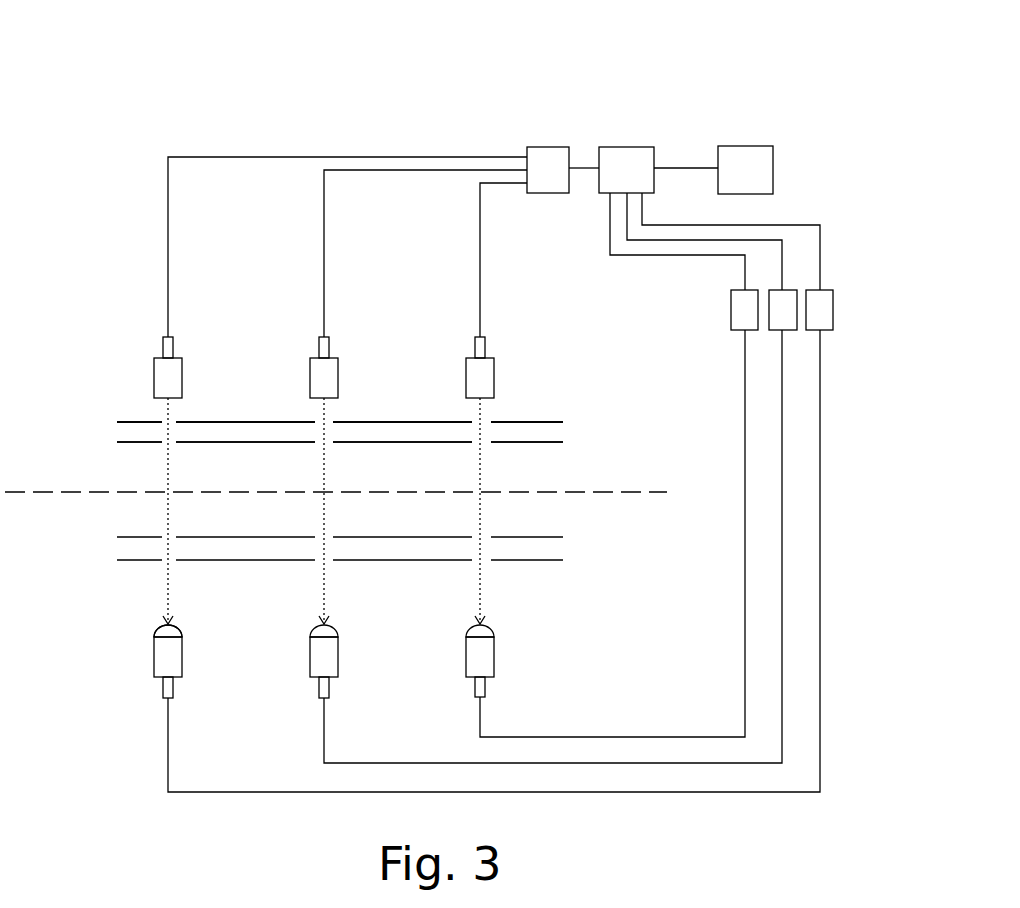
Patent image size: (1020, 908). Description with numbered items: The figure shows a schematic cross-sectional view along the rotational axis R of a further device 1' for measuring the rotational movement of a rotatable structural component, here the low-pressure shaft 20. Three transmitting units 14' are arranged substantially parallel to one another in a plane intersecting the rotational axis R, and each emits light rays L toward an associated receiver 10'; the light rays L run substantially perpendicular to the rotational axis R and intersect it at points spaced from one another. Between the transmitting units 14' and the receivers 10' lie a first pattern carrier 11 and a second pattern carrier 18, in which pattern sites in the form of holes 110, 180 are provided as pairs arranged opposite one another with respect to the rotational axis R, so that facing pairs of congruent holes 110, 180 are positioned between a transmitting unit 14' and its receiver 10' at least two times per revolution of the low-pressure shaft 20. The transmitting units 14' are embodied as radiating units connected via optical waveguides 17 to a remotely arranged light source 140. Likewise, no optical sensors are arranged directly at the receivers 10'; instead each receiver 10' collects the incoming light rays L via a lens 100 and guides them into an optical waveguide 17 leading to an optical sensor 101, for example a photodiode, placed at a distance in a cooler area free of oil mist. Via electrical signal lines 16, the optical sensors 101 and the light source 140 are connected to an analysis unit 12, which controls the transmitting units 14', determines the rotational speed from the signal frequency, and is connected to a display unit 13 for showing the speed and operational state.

The device 1' is at (62, 46).
The optical waveguide 17 is at (373, 157).
The light source 140 is at (548, 147).
The analysis unit 12 is at (628, 147).
The display unit 13 is at (747, 146).
The electrical signal line 16 is at (788, 225).
The optical sensor 101 is at (743, 308).
The transmitting unit 14' is at (286, 353).
The receiver 10' is at (332, 672).
The lens 100 is at (168, 632).
The light ray L is at (165, 588).
The low-pressure shaft 20 is at (536, 416).
The second pattern carrier 18 is at (347, 421).
The first pattern carrier 11 is at (547, 441).
The hole 110 is at (162, 444).
The hole 180 is at (162, 419).
The rotational axis R is at (660, 492).